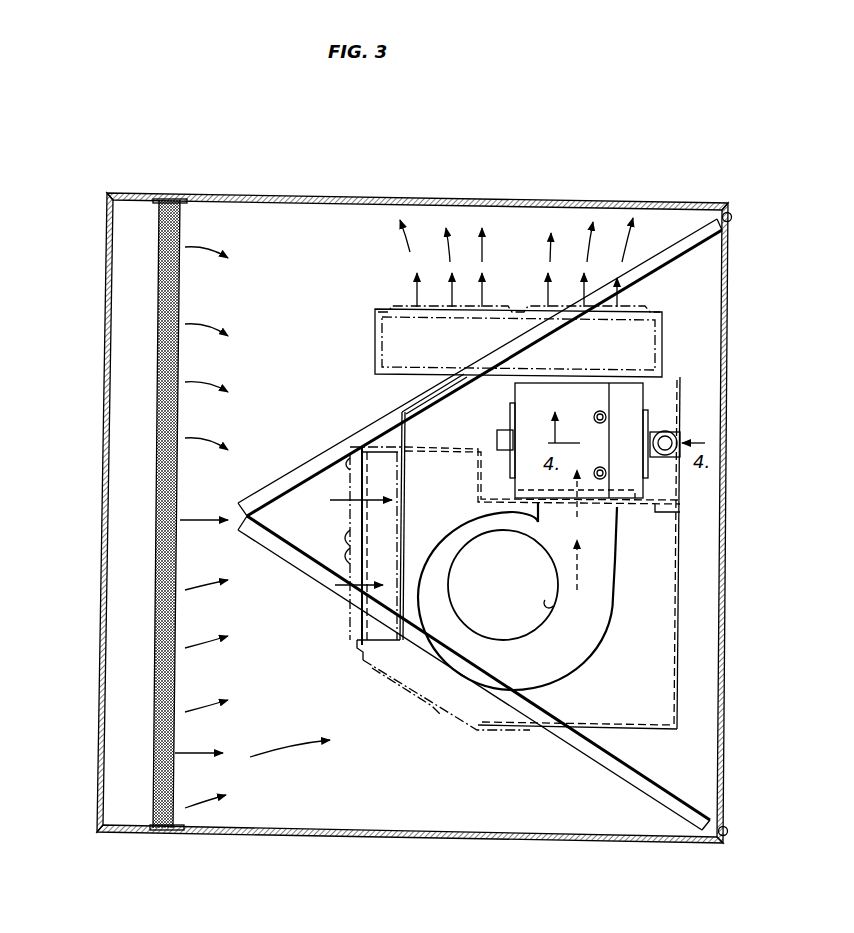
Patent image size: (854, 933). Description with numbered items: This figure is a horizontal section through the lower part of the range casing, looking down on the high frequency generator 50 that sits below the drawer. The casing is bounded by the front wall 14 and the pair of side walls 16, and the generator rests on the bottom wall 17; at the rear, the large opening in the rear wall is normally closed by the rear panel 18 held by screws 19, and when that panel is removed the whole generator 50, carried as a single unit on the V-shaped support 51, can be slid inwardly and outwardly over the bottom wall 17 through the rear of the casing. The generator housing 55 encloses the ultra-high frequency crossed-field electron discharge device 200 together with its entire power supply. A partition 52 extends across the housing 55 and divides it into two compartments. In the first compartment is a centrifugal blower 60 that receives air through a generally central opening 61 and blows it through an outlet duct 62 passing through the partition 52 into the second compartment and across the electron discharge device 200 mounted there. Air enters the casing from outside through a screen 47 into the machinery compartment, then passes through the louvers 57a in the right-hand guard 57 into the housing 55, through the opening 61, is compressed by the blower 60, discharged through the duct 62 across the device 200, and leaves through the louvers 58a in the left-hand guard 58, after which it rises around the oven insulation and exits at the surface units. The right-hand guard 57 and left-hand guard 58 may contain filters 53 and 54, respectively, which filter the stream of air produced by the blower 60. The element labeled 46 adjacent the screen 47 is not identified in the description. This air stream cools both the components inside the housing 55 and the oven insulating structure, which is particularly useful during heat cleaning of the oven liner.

The front wall 14 is at (108, 284).
The side walls 16 is at (482, 198).
The bottom wall 17 is at (714, 205).
The rear panel 18 is at (682, 444).
The screws 19 is at (732, 217).
The filter frame 46 is at (160, 224).
The screen 47 is at (172, 210).
The high frequency generator 50 is at (683, 585).
The V-shaped support 51 is at (648, 256).
The partition 52 is at (660, 509).
The filter 53 is at (367, 630).
The filter 54 is at (378, 330).
The generator housing 55 is at (652, 680).
The right-hand guard 57 is at (376, 516).
The louvers 57a is at (348, 562).
The left-hand guard 58 is at (388, 306).
The louvers 58a is at (408, 302).
The blower 60 is at (622, 592).
The opening 61 is at (552, 607).
The outlet duct 62 is at (618, 532).
The crossed-field electron discharge device 200 is at (668, 404).